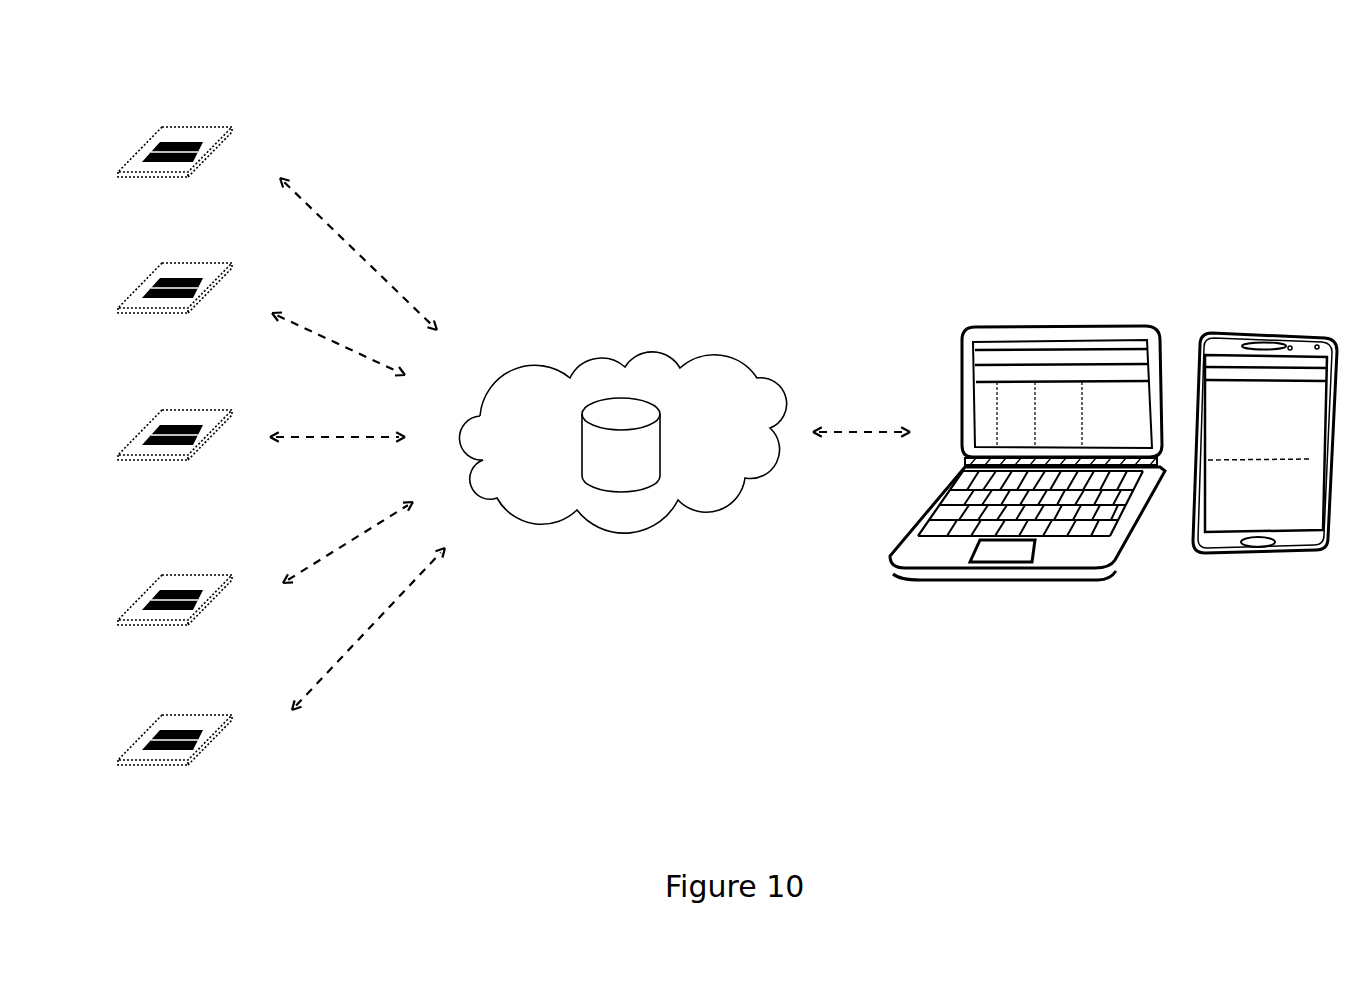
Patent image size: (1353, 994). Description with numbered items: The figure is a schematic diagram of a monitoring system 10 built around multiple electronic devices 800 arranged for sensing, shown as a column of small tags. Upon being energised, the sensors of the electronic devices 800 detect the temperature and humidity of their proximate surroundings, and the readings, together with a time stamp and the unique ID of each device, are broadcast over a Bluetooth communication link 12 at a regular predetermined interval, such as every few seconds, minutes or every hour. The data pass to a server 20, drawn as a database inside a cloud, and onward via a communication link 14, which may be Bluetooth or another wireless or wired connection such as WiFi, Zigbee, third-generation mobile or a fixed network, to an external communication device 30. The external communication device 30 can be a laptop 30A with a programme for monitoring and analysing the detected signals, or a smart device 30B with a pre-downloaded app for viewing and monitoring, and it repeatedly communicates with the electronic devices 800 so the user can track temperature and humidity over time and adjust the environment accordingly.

The monitoring system 10 is at (905, 162).
The electronic device 800 is at (162, 127).
The Bluetooth communication link 12 is at (357, 444).
The server 20 is at (624, 415).
The communication link 14 is at (861, 415).
The external communication device 30 is at (1177, 300).
The laptop 30A is at (1060, 560).
The smart device 30B is at (1285, 543).